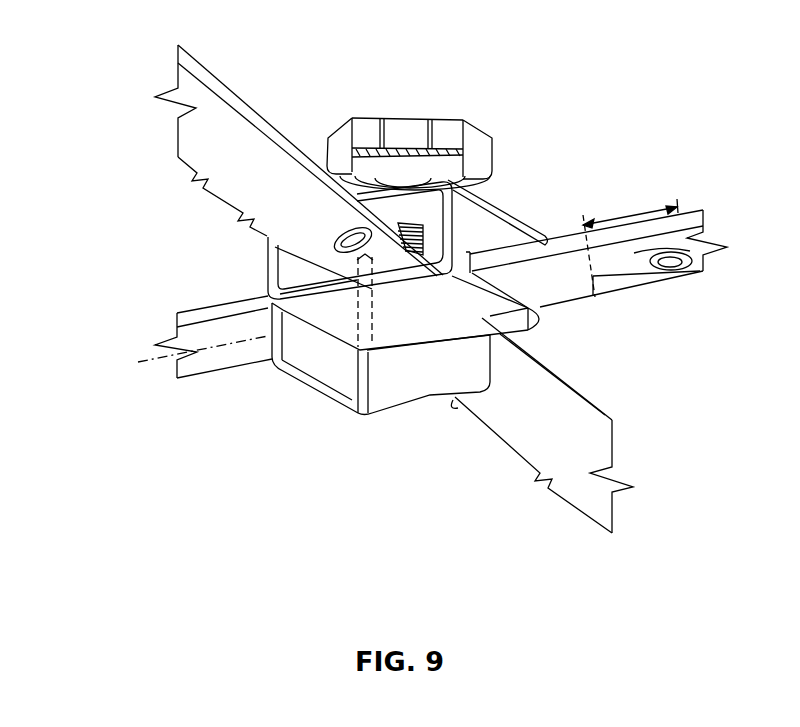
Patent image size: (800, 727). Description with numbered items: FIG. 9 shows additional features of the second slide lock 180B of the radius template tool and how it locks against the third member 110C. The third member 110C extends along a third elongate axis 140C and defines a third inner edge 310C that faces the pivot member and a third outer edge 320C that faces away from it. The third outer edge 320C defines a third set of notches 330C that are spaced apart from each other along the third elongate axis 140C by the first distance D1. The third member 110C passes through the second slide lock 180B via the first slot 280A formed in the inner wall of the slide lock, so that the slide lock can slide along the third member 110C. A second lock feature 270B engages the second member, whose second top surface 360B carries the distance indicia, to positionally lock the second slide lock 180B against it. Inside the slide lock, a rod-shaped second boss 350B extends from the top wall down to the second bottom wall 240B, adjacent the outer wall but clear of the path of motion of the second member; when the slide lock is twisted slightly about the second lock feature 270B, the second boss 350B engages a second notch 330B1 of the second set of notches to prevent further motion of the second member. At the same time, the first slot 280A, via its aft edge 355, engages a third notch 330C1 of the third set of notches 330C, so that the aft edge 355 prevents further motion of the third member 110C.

The aft edge 355 is at (633, 485).
The second bottom wall 240B is at (321, 320).
The second slide lock 180B is at (493, 200).
The second top surface 360B is at (510, 210).
The second lock feature 270B is at (383, 118).
The second boss 350B is at (355, 324).
The first slot 280A is at (480, 258).
The second notch 330B1 is at (452, 405).
The third member 110C is at (185, 330).
The third outer edge 320C is at (220, 370).
The third elongate axis 140C is at (136, 355).
The third inner edge 310C is at (693, 210).
The third notch 330C1 is at (630, 321).
The third set of notches 330C is at (652, 278).
The first distance D1 is at (632, 212).